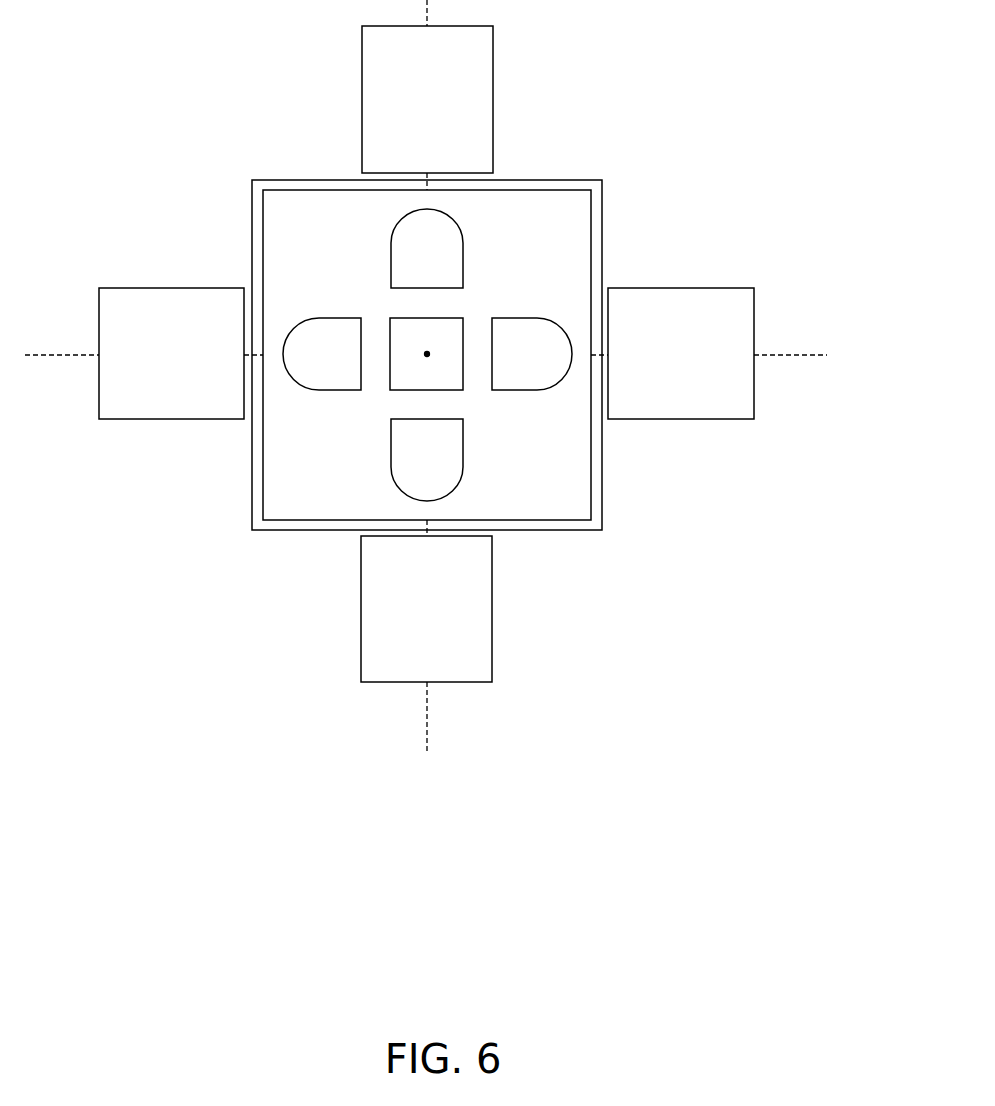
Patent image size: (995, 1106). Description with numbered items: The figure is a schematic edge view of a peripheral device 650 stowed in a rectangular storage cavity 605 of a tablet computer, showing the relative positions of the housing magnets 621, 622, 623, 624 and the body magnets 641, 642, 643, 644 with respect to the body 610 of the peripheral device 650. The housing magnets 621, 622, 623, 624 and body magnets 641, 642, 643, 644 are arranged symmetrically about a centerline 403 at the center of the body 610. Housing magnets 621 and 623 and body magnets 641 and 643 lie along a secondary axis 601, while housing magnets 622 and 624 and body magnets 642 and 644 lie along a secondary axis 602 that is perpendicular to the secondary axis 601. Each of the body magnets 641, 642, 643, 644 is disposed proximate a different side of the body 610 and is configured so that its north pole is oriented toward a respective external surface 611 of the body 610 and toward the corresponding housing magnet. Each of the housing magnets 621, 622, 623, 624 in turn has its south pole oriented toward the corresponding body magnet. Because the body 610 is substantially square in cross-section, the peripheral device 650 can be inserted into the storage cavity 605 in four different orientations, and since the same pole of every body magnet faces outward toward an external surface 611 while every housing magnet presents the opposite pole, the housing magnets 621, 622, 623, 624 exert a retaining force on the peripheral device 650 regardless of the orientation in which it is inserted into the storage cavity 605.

The peripheral device 650 is at (573, 168).
The storage cavity 605 is at (602, 255).
The body 610 is at (427, 355).
The external surface 611 is at (263, 220).
The centerline 403 is at (427, 354).
The body magnet 641 is at (322, 354).
The body magnet 642 is at (427, 251).
The body magnet 643 is at (533, 354).
The body magnet 644 is at (427, 459).
The housing magnet 621 is at (171, 353).
The housing magnet 622 is at (427, 99).
The housing magnet 623 is at (681, 353).
The housing magnet 624 is at (426, 609).
The secondary axis 601 is at (767, 355).
The secondary axis 602 is at (423, 695).